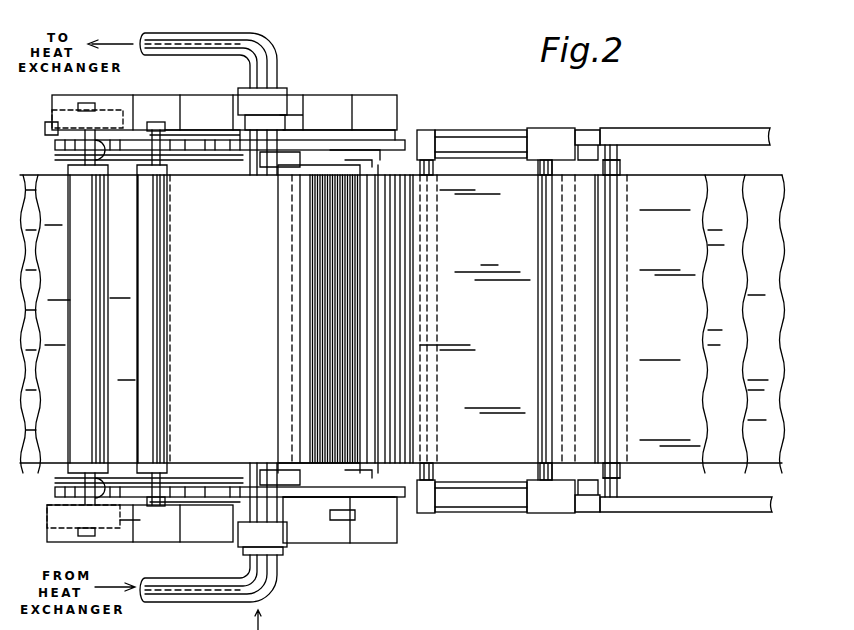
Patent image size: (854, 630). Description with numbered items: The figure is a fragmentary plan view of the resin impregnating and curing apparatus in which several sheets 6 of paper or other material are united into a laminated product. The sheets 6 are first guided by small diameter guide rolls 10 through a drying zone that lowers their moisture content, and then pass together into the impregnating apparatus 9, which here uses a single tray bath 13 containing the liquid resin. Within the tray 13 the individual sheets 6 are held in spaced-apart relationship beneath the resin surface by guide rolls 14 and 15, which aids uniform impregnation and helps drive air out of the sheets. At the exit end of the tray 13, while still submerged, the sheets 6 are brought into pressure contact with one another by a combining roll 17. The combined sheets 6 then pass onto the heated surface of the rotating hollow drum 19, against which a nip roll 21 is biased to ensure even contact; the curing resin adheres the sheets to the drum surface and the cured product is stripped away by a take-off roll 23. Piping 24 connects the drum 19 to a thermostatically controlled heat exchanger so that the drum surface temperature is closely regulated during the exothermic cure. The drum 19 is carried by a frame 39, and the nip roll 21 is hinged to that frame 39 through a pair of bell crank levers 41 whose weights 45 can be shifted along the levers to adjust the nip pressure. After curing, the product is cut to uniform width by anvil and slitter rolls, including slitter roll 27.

The sheets 6 is at (50, 182).
The impregnating apparatus 9 is at (489, 257).
The guide rolls 10 is at (613, 200).
The tray bath 13 is at (300, 482).
The guide rolls 14 is at (545, 308).
The guide rolls 15 is at (435, 178).
The combining roll 17 is at (403, 240).
The hollow drum 19 is at (295, 130).
The nip roll 21 is at (377, 185).
The take-off roll 23 is at (138, 257).
The piping 24 is at (200, 33).
The slitter roll 27 is at (77, 440).
The frame 39 is at (150, 97).
The bell crank levers 41 is at (330, 145).
The weights 45 is at (72, 134).